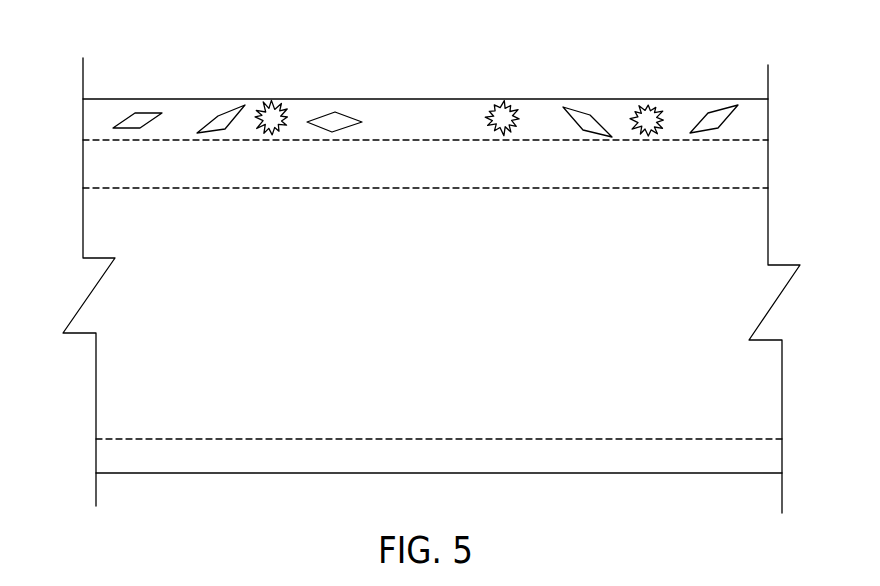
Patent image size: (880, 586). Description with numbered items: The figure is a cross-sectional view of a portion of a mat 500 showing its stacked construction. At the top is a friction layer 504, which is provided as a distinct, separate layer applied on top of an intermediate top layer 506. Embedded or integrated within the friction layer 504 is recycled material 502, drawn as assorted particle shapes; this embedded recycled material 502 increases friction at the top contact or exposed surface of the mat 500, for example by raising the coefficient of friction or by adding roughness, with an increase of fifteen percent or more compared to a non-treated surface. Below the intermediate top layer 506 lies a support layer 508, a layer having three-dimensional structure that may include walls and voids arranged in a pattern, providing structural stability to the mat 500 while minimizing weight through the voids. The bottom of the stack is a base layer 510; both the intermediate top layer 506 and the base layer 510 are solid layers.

The mat 500 is at (108, 48).
The recycled material 502 is at (220, 118).
The friction layer 504 is at (423, 129).
The intermediate top layer 506 is at (423, 174).
The support layer 508 is at (427, 349).
The base layer 510 is at (427, 467).